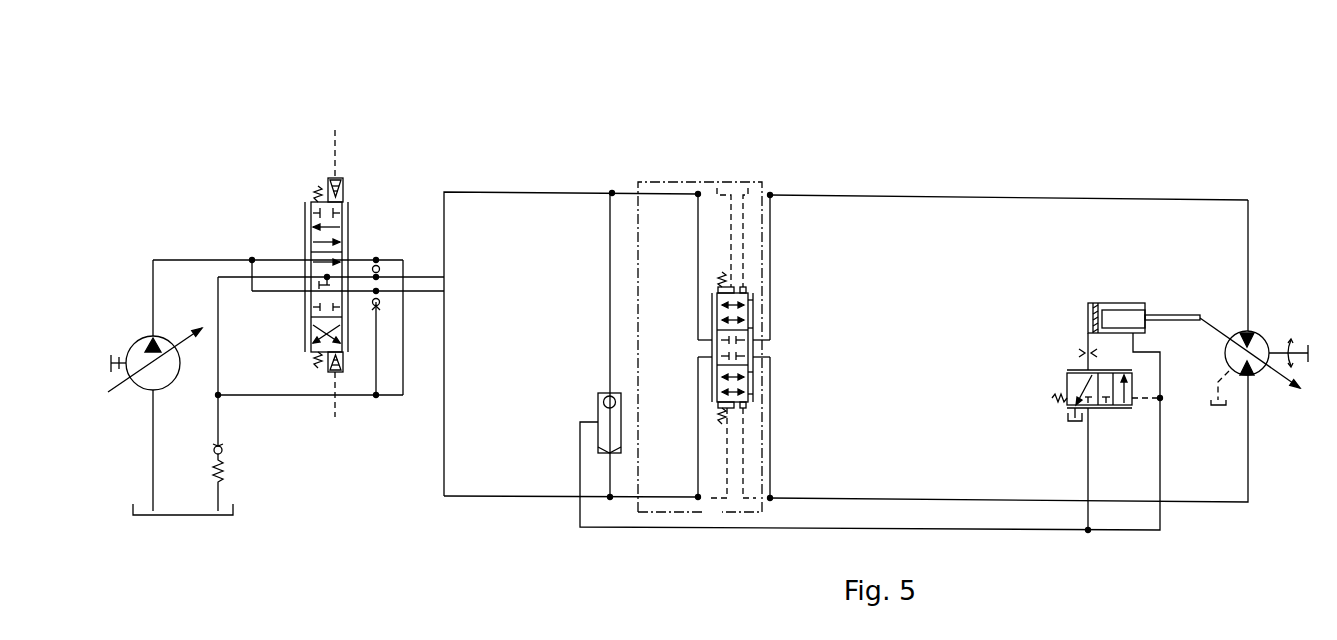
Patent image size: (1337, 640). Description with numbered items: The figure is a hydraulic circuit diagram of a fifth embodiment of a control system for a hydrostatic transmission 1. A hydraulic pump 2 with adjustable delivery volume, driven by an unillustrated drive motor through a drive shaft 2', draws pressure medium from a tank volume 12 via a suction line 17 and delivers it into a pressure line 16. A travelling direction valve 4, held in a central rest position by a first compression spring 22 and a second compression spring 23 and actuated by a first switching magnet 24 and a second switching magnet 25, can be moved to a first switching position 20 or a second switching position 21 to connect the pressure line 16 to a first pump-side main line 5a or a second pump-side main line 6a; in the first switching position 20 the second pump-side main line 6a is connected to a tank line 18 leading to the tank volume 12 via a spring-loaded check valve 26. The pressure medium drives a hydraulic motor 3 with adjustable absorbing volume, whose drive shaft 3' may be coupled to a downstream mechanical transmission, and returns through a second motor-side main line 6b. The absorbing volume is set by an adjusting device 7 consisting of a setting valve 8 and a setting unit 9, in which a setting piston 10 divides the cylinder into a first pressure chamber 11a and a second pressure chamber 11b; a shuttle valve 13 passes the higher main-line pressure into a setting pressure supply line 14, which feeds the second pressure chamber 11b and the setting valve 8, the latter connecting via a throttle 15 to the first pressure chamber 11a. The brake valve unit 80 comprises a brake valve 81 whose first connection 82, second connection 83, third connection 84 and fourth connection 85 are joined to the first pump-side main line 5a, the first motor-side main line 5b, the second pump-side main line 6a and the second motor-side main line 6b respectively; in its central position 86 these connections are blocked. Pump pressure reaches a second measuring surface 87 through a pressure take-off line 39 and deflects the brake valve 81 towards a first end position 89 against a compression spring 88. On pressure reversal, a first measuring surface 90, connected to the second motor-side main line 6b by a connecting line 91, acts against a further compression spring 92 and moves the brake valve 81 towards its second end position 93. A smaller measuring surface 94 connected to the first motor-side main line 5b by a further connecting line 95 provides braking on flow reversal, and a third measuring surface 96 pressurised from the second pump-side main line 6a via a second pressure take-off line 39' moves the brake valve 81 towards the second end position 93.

The hydrostatic transmission 1 is at (469, 82).
The hydraulic pump 2 is at (155, 341).
The drive shaft 2' is at (120, 334).
The hydraulic motor 3 is at (1245, 302).
The drive shaft 3' is at (1297, 340).
The travelling direction valve 4 is at (298, 191).
The first pump-side main line 5a is at (565, 192).
The first motor-side main line 5b is at (1025, 199).
The second pump-side main line 6a is at (512, 498).
The second motor-side main line 6b is at (1190, 503).
The adjusting device 7 is at (1178, 412).
The setting valve 8 is at (1060, 372).
The setting unit 9 is at (1121, 296).
The setting piston 10 is at (1090, 303).
The first pressure chamber 11a is at (1088, 318).
The second pressure chamber 11b is at (1130, 308).
The tank volume 12 is at (180, 519).
The shuttle valve 13 is at (597, 410).
The setting pressure supply line 14 is at (998, 531).
The throttle 15 is at (1082, 352).
The pressure line 16 is at (176, 258).
The suction line 17 is at (151, 447).
The tank line 18 is at (216, 300).
The first switching position 20 is at (310, 341).
The second switching position 21 is at (344, 234).
The first compression spring 22 is at (312, 362).
The second compression spring 23 is at (318, 186).
The first switching magnet 24 is at (344, 368).
The second switching magnet 25 is at (344, 190).
The spring-loaded check valve 26 is at (224, 471).
The pressure take-off line 39 is at (717, 214).
The second pressure take-off line 39' is at (719, 493).
The brake valve unit 80 is at (668, 182).
The brake valve 81 is at (753, 348).
The first connection 82 is at (713, 334).
The second connection 83 is at (754, 330).
The third connection 84 is at (713, 371).
The fourth connection 85 is at (754, 373).
The central position 86 is at (718, 350).
The second measuring surface 87 is at (718, 290).
The compression spring 88 is at (718, 408).
The first end position 89 is at (750, 303).
The first measuring surface 90 is at (747, 407).
The connecting line 91 is at (746, 462).
The further compression spring 92 is at (721, 274).
The second end position 93 is at (752, 394).
The smaller measuring surface 94 is at (747, 288).
The further connecting line 95 is at (748, 189).
The third measuring surface 96 is at (718, 412).